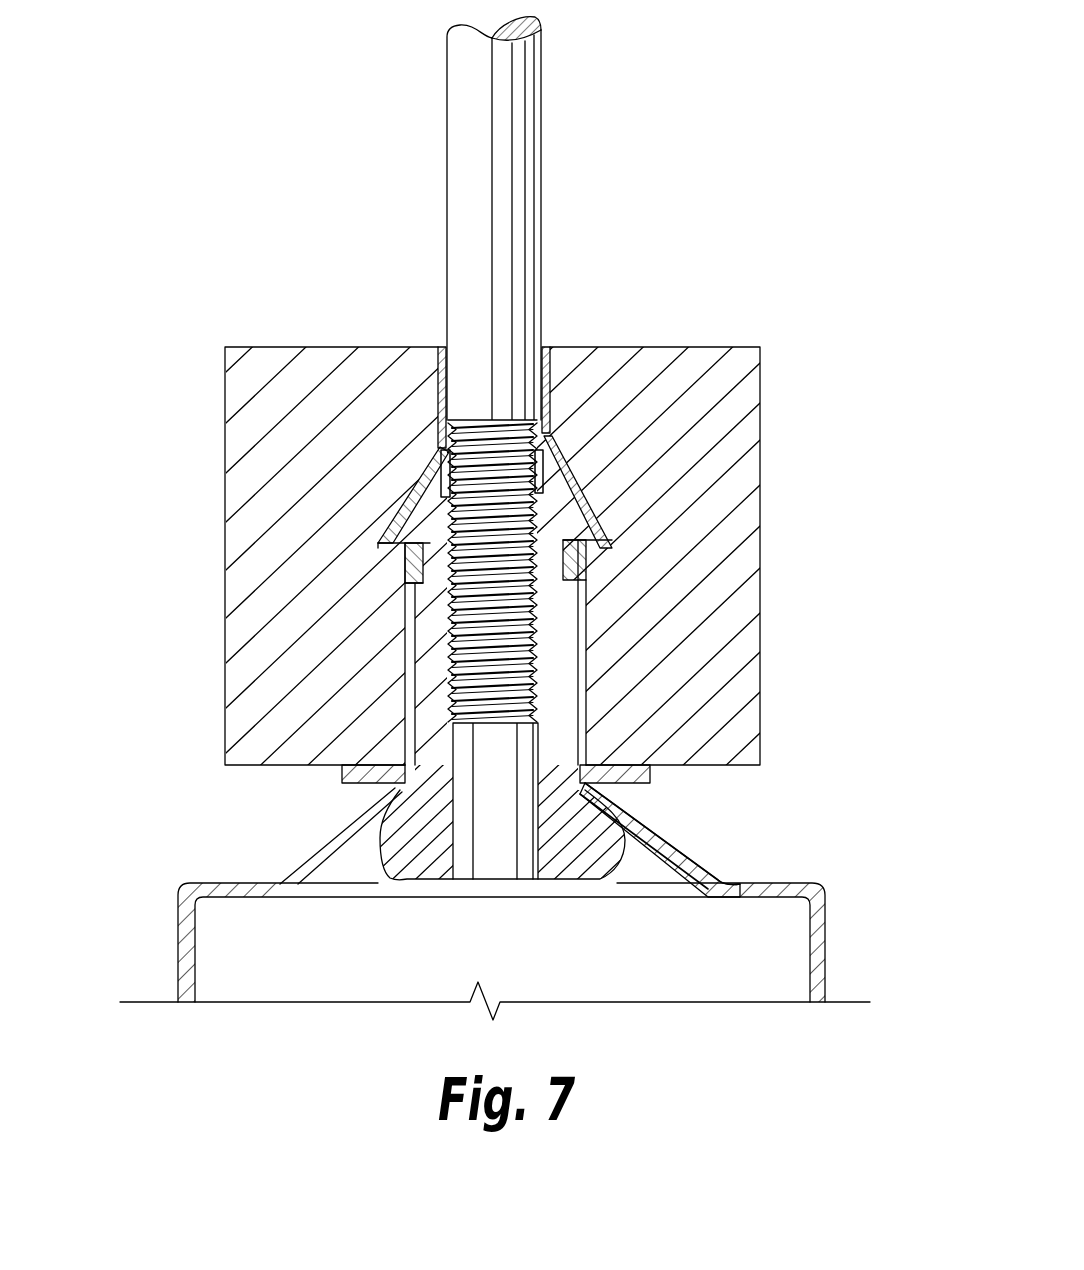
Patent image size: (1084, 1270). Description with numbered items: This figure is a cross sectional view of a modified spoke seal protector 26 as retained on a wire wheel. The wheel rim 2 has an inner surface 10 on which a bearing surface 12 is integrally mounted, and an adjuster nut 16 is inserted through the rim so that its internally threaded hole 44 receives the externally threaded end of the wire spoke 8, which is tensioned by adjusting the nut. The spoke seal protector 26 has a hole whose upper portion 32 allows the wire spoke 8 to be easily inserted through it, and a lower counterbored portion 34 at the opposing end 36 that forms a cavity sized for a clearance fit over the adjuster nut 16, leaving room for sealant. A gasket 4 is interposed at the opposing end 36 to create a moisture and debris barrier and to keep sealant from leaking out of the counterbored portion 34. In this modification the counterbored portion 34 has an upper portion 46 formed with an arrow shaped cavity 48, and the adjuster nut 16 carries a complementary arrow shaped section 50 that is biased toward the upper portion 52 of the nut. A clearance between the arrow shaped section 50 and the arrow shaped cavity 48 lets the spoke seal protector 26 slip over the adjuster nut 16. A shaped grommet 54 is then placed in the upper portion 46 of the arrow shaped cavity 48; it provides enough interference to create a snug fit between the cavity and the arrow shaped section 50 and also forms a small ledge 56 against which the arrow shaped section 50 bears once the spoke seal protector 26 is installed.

The wheel rim 2 is at (828, 952).
The gasket 4 is at (653, 785).
The wire spoke 8 is at (541, 190).
The inner surface 10 is at (668, 850).
The bearing surface 12 is at (393, 786).
The adjuster nut 16 is at (422, 880).
The spoke seal protector 26 is at (762, 700).
The upper portion of the hole 32 is at (548, 352).
The lower counterbored portion 34 is at (578, 600).
The opposing end 36 is at (345, 779).
The internally threaded hole 44 is at (545, 683).
The upper portion of the counterbored portion 46 is at (590, 540).
The arrow shaped cavity 48 is at (595, 492).
The arrow shaped section 50 is at (598, 518).
The upper portion of the adjuster nut 52 is at (440, 490).
The shaped grommet 54 is at (432, 457).
The small ledge 56 is at (385, 560).